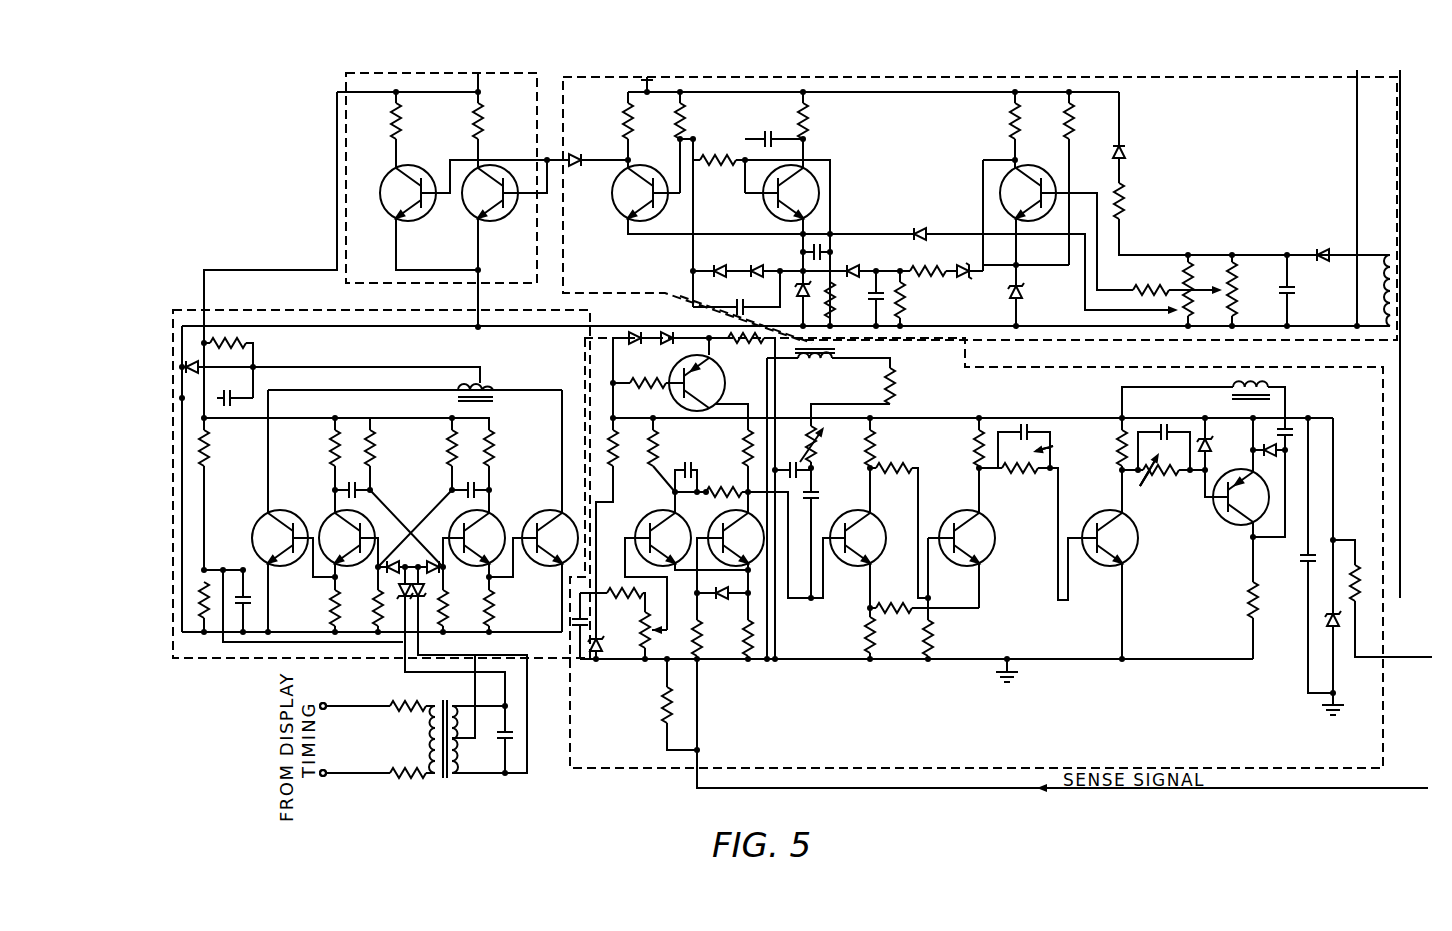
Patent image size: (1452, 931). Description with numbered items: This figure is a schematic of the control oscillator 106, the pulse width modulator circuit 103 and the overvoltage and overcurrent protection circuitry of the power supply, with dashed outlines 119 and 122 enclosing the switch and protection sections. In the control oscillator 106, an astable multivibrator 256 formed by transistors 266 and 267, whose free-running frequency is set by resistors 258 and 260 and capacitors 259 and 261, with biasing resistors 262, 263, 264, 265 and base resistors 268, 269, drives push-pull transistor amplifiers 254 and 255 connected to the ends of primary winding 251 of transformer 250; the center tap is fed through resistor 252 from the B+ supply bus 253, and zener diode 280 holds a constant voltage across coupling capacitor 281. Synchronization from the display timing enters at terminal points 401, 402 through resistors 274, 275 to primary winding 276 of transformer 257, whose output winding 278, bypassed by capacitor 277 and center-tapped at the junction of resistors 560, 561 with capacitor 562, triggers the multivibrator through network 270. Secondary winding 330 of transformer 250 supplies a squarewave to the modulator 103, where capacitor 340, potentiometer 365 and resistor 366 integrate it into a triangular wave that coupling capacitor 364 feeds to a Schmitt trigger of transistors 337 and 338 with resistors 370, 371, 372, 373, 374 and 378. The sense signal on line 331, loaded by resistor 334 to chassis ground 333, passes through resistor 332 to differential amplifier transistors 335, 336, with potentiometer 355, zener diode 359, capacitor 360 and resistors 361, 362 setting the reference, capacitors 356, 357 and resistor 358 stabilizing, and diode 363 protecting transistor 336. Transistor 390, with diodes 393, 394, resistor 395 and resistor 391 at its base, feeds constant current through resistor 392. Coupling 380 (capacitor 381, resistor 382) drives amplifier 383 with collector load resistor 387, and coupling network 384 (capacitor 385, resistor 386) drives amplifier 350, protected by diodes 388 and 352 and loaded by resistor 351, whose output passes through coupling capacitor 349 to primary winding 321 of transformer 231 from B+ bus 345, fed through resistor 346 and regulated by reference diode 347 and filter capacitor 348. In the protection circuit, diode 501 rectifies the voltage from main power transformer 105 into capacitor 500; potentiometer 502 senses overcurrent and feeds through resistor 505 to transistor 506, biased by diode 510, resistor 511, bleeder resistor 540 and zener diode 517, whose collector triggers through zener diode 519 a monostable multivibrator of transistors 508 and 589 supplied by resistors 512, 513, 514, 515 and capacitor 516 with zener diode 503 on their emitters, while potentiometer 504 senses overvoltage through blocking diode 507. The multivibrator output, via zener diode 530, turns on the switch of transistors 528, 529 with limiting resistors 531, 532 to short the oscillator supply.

The driver circuit block 119 is at (344, 90).
The power supply circuit block 122 is at (562, 292).
The control oscillator 106 is at (250, 310).
The pulse width modulator circuit 103 is at (620, 768).
The main power transformer 105 is at (1386, 334).
The collector current limiting resistor 531 is at (404, 128).
The collector current limiting resistor 532 is at (486, 128).
The transistor 528 is at (408, 222).
The transistor 529 is at (490, 222).
The zener diode 530 is at (578, 152).
The B+ supply bus 253 is at (337, 245).
The zener diode 280 is at (193, 356).
The resistor 512 is at (624, 110).
The resistor 513 is at (688, 118).
The capacitor 516 is at (760, 132).
The resistor 515 is at (815, 118).
The resistor 514 is at (720, 162).
The transistor 589 is at (620, 206).
The transistor 508 is at (818, 180).
The zener diode 503 is at (800, 296).
The zener diode 519 is at (964, 262).
The blocking diode 507 is at (920, 228).
The bleeder bias resistor 540 is at (1075, 122).
The transistor 506 is at (1035, 166).
The zener diode 517 is at (1025, 294).
The current limiting resistor 505 is at (1160, 286).
The diode 510 is at (1128, 151).
The resistor 511 is at (1128, 200).
The potentiometer 504 is at (1185, 258).
The potentiometer 502 is at (1228, 255).
The capacitor 500 is at (1287, 275).
The diode 501 is at (1325, 245).
The diode 393 is at (633, 330).
The diode 394 is at (667, 330).
The resistor 252 is at (250, 340).
The coupling capacitor 281 is at (235, 395).
The primary winding 251 is at (481, 383).
The transformer 250 is at (504, 392).
The resistor 560 is at (209, 447).
The resistor 561 is at (208, 590).
The capacitor 562 is at (252, 600).
The resistor 258 is at (332, 463).
The capacitor 259 is at (350, 485).
The biasing resistor 262 is at (375, 462).
The biasing resistor 263 is at (448, 462).
The resistor 260 is at (493, 460).
The capacitor 261 is at (478, 490).
The transistor amplifier 254 is at (262, 515).
The transistor 266 is at (333, 515).
The transistor 267 is at (493, 515).
The transistor amplifier 255 is at (560, 567).
The astable multivibrator 256 is at (427, 524).
The biasing resistor 264 is at (330, 605).
The resistor 268 is at (377, 604).
The resistor 269 is at (444, 606).
The biasing resistor 265 is at (490, 600).
The network 270 is at (400, 583).
The resistor 274 is at (405, 700).
The resistor 275 is at (405, 778).
The primary winding 276 is at (436, 712).
The output winding 278 is at (470, 715).
The transformer 257 is at (450, 782).
The capacitor 277 is at (521, 744).
The terminal point 401 is at (325, 708).
The terminal point 402 is at (325, 773).
The resistor 395 is at (764, 345).
The secondary winding 330 is at (840, 350).
The resistor 366 is at (895, 385).
The resistor 391 is at (641, 381).
The transistor 390 is at (678, 392).
The resistor 361 is at (622, 448).
The resistor 362 is at (657, 440).
The resistor 392 is at (750, 440).
The capacitor 356 is at (691, 456).
The resistor 358 is at (720, 490).
The capacitor 357 is at (670, 493).
The transistor 335 is at (640, 522).
The transistor 336 is at (738, 510).
The diode 363 is at (735, 598).
The resistor 332 is at (700, 640).
The potentiometer 355 is at (643, 628).
The zener diode 359 is at (598, 656).
The filtering capacitor 360 is at (582, 640).
The sense signal load resistor 334 is at (665, 705).
The line 331 is at (698, 718).
The chassis ground 333 is at (823, 662).
The potentiometer 365 is at (818, 446).
The integrating capacitor 340 is at (812, 475).
The coupling capacitor 364 is at (817, 494).
The resistor 371 is at (878, 446).
The resistor 378 is at (893, 472).
The transistor 337 is at (855, 566).
The resistor 374 is at (895, 605).
The resistor 370 is at (868, 630).
The resistor 373 is at (935, 630).
The resistor 372 is at (975, 440).
The transistor 338 is at (997, 540).
The capacitor 381 is at (1023, 428).
The resistor 382 is at (1033, 478).
The coupling 380 is at (1050, 458).
The transistor amplifier 383 is at (1128, 562).
The collector load resistor 387 is at (1120, 440).
The capacitor 385 is at (1160, 428).
The coupling network 384 is at (1140, 478).
The diode 388 is at (1165, 478).
The resistor 386 is at (1165, 500).
The transformer 231 is at (1240, 403).
The primary winding 321 is at (1265, 385).
The protective diode 352 is at (1290, 425).
The coupling capacitor 349 is at (1292, 448).
The B+ bus 345 is at (1334, 450).
The transistor amplifier stage 350 is at (1225, 520).
The filter capacitor 348 is at (1303, 560).
The resistor 346 is at (1358, 566).
The load resistor 351 is at (1250, 600).
The voltage regulator reference diode 347 is at (1325, 622).